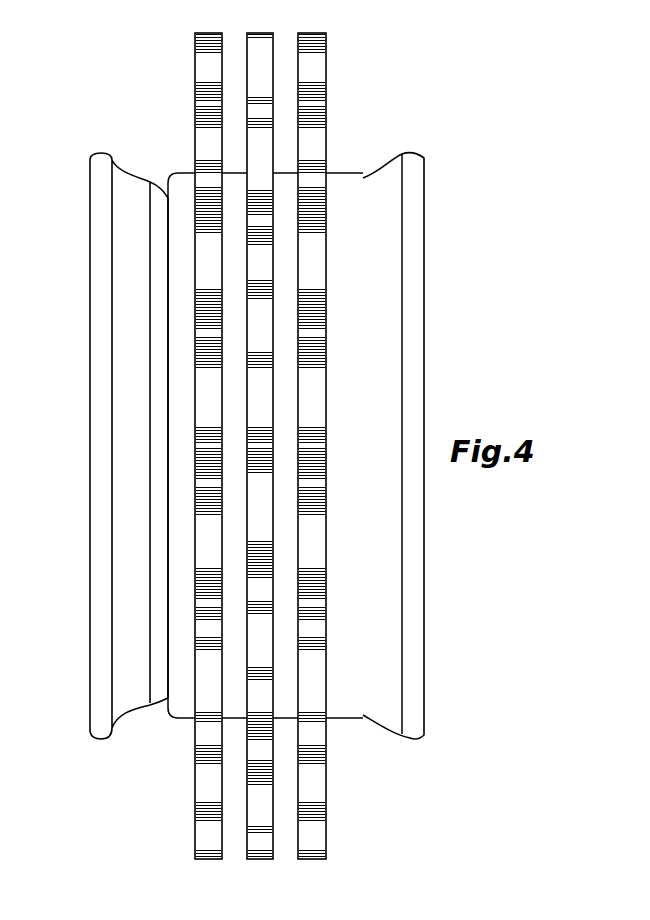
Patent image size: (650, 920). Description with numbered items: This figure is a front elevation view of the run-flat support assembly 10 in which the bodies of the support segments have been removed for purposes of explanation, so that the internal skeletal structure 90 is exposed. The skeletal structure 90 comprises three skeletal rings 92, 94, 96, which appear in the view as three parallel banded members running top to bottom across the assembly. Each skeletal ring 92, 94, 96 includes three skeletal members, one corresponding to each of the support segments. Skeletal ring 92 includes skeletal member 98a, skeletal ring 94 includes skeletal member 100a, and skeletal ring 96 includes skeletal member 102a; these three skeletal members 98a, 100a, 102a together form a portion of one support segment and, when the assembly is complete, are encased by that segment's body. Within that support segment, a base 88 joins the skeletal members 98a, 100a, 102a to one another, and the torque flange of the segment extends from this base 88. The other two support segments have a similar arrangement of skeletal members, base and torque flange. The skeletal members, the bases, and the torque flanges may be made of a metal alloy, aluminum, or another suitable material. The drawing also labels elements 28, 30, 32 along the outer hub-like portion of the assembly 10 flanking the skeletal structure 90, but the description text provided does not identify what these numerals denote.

The run-flat support assembly 10 is at (464, 105).
The hub 28 is at (430, 240).
The first end flange 30 is at (90, 545).
The second end flange 32 is at (425, 598).
The base 88 is at (232, 275).
The skeletal structure 90 is at (412, 446).
The skeletal ring 92 is at (114, 446).
The skeletal ring 94 is at (354, 431).
The skeletal ring 96 is at (326, 112).
The skeletal member 98a is at (195, 358).
The skeletal member 100a is at (264, 418).
The skeletal member 102a is at (326, 471).